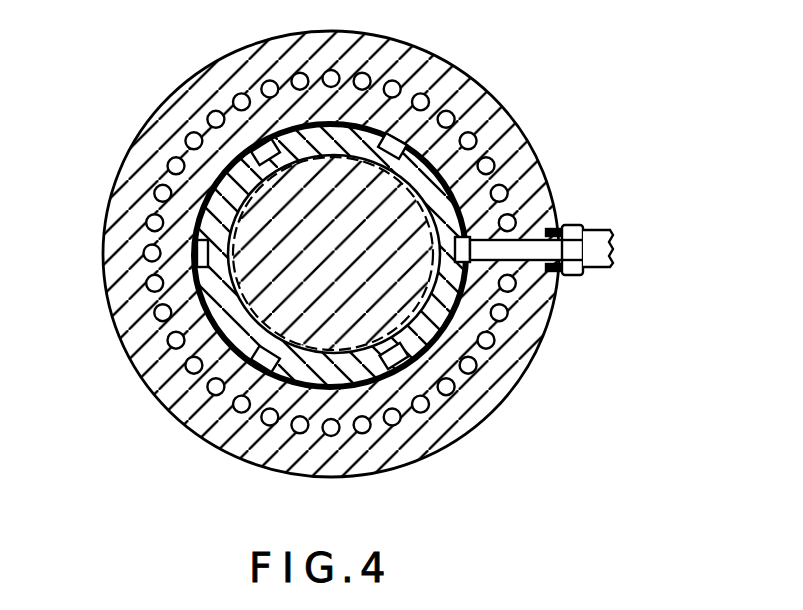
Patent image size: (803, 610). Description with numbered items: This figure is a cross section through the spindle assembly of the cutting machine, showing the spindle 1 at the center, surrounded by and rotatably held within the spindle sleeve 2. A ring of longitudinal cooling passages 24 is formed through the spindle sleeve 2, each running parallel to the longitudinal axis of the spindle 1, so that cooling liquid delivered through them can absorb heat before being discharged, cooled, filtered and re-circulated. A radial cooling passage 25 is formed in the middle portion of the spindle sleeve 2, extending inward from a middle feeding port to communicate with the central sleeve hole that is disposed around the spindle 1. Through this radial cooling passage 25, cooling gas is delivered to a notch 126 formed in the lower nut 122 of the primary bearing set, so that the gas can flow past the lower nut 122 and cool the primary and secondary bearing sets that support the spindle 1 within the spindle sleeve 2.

The spindle 1 is at (237, 344).
The spindle sleeve 2 is at (517, 128).
The longitudinal cooling passages 24 is at (447, 395).
The radial cooling passage 25 is at (552, 223).
The lower nut 122 is at (207, 298).
The notch 126 is at (268, 143).